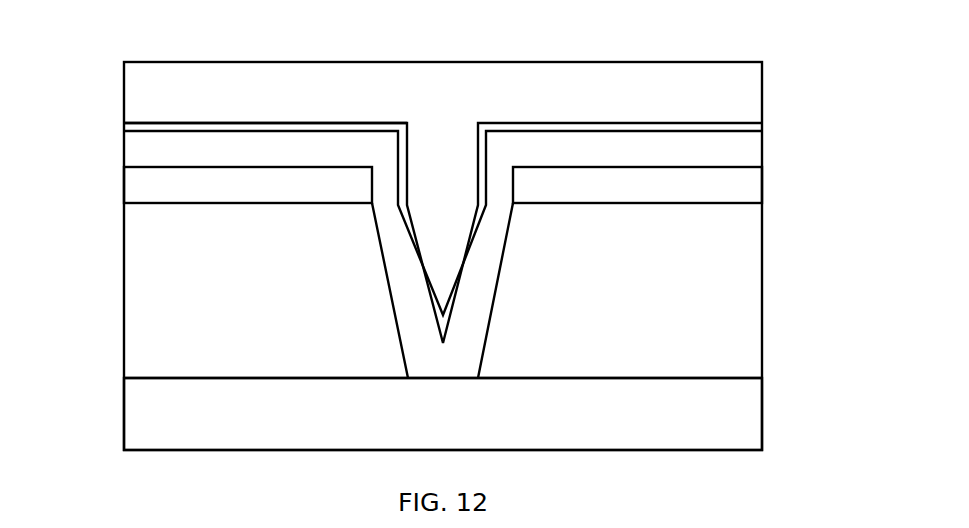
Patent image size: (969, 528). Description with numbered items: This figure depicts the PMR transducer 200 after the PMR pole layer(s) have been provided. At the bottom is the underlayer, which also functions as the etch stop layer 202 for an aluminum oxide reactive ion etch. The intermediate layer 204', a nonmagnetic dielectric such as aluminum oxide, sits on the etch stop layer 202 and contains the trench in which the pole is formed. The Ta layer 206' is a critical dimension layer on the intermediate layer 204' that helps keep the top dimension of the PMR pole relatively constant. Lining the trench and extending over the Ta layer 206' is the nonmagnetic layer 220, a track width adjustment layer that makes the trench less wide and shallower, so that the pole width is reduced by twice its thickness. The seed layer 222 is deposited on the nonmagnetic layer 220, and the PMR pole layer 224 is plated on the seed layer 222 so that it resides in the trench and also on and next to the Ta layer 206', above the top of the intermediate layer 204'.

The PMR transducer 200 is at (466, 37).
The PMR pole layer 224 is at (124, 90).
The seed layer 222 is at (549, 123).
The nonmagnetic layer 220 is at (763, 138).
The Ta layer 206' is at (444, 168).
The intermediate layer 204' is at (444, 290).
The etch stop layer 202 is at (763, 400).